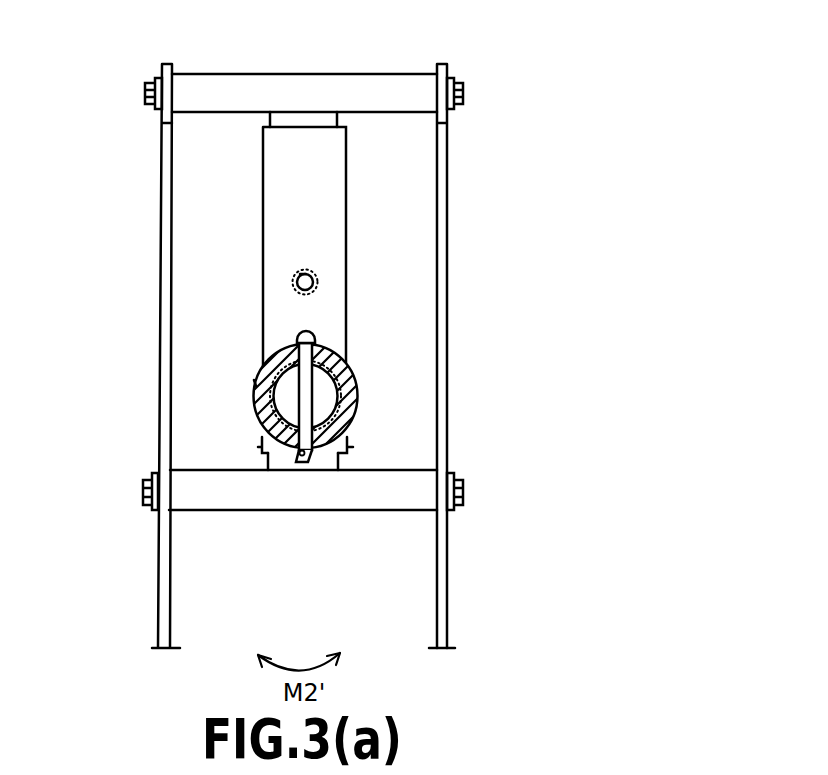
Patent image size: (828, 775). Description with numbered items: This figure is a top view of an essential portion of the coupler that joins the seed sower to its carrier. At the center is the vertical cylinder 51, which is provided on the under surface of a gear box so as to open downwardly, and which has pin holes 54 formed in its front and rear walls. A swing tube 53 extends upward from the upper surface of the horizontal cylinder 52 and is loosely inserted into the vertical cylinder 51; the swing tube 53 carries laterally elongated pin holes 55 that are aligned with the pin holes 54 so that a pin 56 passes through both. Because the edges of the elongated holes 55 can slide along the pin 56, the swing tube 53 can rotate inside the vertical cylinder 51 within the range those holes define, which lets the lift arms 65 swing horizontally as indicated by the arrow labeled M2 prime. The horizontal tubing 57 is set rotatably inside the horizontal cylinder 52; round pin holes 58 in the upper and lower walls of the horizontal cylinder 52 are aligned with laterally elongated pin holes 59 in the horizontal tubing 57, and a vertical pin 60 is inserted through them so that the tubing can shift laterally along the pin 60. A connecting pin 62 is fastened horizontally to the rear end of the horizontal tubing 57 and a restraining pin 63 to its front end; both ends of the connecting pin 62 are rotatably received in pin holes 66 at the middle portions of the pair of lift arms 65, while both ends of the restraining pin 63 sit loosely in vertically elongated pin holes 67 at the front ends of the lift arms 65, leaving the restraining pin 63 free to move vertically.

The vertical cylinder 51 is at (357, 380).
The horizontal cylinder 52 is at (262, 192).
The swing tube 53 is at (333, 402).
The pin holes 54 is at (312, 450).
The laterally elongated pin holes 55 is at (258, 366).
The pin 56 is at (302, 333).
The horizontal tubing 57 is at (318, 118).
The round pin holes 58 is at (320, 286).
The laterally elongated pin holes 59 is at (318, 281).
The vertical pin 60 is at (303, 274).
The connecting pin 62 is at (213, 502).
The restraining pin 63 is at (242, 88).
The lift arms 65 is at (161, 232).
The pin holes 66 is at (147, 494).
The vertically elongated pin holes 67 is at (145, 93).